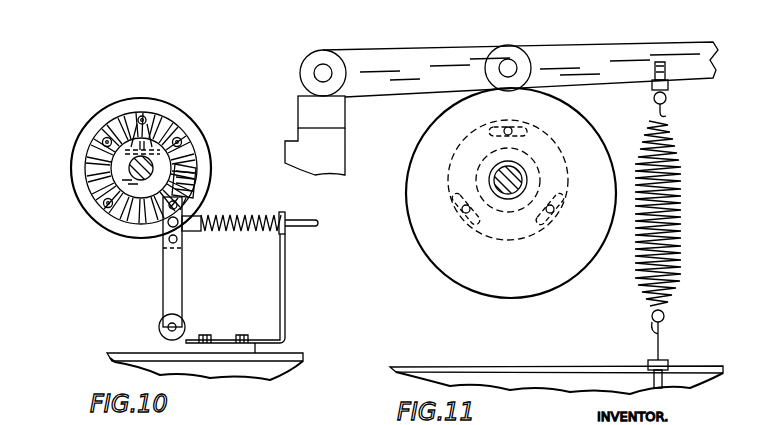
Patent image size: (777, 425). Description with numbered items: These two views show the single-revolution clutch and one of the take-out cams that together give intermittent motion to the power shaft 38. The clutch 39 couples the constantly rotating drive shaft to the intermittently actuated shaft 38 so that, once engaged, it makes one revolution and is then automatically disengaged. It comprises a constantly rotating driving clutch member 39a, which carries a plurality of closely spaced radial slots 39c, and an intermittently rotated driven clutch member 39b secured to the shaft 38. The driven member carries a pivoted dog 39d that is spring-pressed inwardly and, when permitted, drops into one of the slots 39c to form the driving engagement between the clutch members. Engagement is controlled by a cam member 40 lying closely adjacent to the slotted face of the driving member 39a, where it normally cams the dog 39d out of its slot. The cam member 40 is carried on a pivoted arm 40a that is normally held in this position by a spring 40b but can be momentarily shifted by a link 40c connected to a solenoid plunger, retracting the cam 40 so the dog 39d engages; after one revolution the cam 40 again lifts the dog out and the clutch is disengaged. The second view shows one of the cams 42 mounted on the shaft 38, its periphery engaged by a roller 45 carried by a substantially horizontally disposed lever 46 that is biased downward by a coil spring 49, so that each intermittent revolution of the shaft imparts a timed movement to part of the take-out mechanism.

In FIG. 10, the intermittently actuated shaft 38 is at (131, 172).
In FIG. 11, the intermittently actuated shaft 38 is at (494, 178).
In FIG. 10, the clutch 39 is at (185, 108).
In FIG. 10, the driving clutch member 39a is at (204, 158).
In FIG. 10, the driven clutch member 39b is at (116, 158).
In FIG. 10, the radial slots 39c is at (181, 140).
In FIG. 10, the pivoted dog 39d is at (131, 134).
In FIG. 10, the cam member 40 is at (197, 182).
In FIG. 10, the pivoted arm 40a is at (167, 272).
In FIG. 10, the spring 40b is at (259, 222).
In FIG. 10, the link 40c is at (300, 223).
In FIG. 11, the cam 42 is at (452, 270).
In FIG. 11, the roller 45 is at (530, 60).
In FIG. 11, the lever 46 is at (605, 46).
In FIG. 11, the coil spring 49 is at (678, 177).